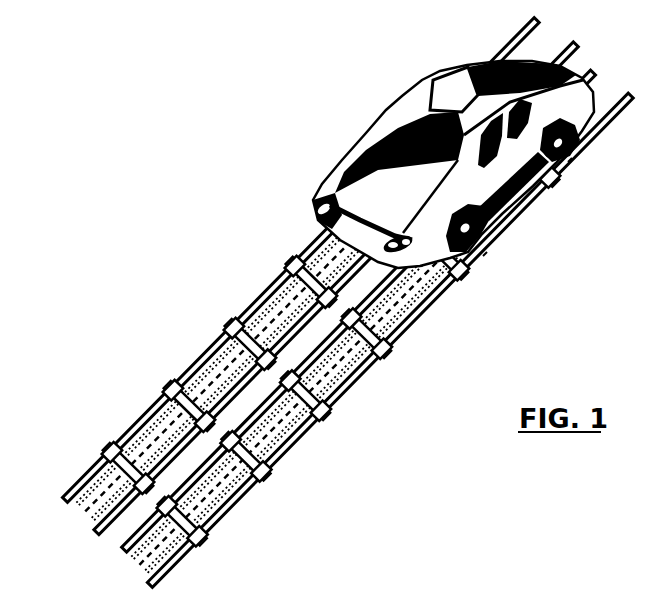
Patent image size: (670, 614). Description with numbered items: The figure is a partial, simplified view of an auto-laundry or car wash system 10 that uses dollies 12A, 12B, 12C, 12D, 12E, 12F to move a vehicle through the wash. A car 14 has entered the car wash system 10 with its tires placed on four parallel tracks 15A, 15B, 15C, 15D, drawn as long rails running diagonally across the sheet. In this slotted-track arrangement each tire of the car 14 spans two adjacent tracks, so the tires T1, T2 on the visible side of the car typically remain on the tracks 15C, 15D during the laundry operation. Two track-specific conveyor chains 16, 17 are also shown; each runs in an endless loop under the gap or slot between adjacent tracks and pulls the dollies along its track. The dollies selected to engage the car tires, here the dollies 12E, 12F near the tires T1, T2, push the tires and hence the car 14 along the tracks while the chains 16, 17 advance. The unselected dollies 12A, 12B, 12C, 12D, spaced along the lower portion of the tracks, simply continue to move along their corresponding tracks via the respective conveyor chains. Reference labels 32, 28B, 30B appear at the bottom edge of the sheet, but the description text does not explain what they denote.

The car wash system 10 is at (80, 165).
The car 14 is at (458, 95).
The track 15A is at (301, 260).
The track 15B is at (336, 288).
The track 15C is at (359, 311).
The track 15D is at (390, 340).
The conveyor chain 16 is at (223, 371).
The conveyor chain 17 is at (354, 346).
The dolly 12A is at (182, 521).
The dolly 12B is at (246, 456).
The dolly 12C is at (306, 395).
The dolly 12D is at (367, 333).
The dolly 12E is at (444, 254).
The dolly 12F is at (535, 162).
The tire T1 is at (485, 254).
The tire T2 is at (570, 160).
The controller 32 is at (660, 603).
The connector 28B is at (444, 610).
The connector 30B is at (531, 609).